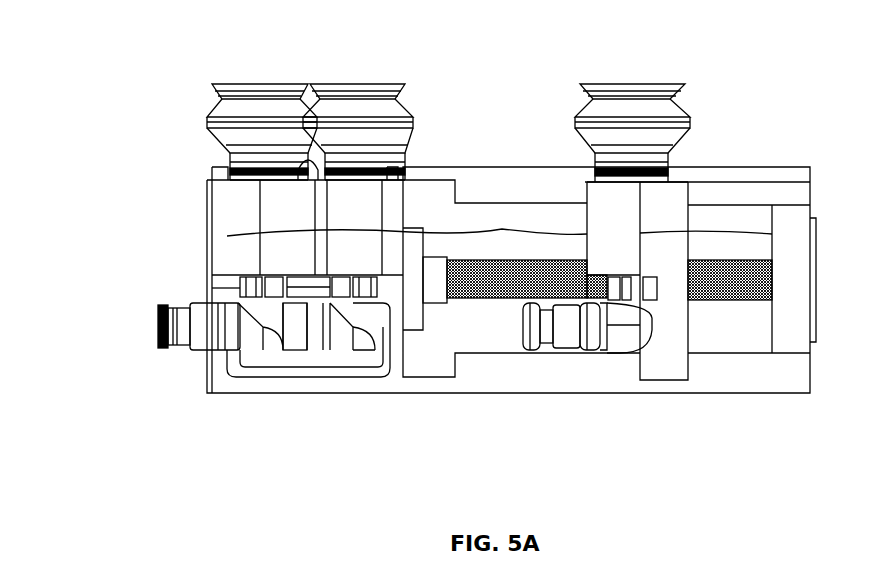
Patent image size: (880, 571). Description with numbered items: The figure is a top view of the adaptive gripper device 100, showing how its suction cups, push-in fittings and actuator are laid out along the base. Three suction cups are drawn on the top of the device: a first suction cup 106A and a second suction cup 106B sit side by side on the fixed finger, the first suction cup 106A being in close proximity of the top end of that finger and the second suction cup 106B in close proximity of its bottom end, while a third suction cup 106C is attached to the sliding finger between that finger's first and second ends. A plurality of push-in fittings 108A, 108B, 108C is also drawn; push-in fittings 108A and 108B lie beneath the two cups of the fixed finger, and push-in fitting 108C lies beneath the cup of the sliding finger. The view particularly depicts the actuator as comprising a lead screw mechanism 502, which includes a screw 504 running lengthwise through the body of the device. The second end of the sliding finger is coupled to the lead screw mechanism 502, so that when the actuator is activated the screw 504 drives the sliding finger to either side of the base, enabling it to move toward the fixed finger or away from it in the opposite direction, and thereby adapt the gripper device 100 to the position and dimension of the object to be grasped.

The adaptive gripper device 100 is at (623, 480).
The first suction cup 106A is at (262, 123).
The second suction cup 106B is at (365, 125).
The third suction cup 106C is at (636, 125).
The push-in fitting 108A is at (227, 340).
The push-in fitting 108B is at (317, 337).
The push-in fitting 108C is at (592, 337).
The lead screw mechanism 502 is at (502, 228).
The screw 504 is at (722, 300).